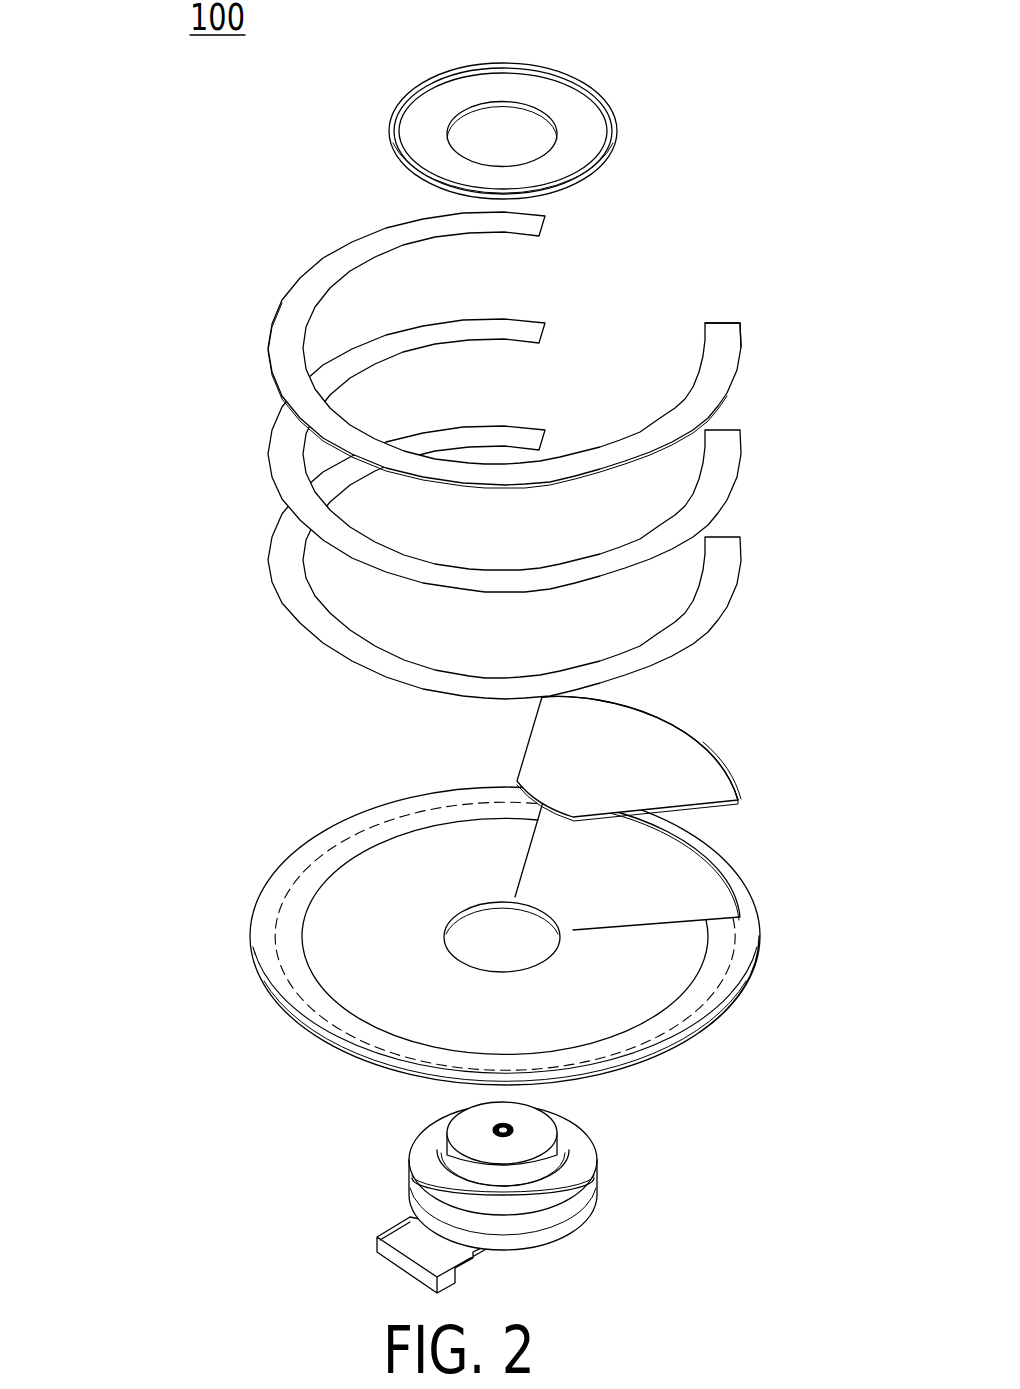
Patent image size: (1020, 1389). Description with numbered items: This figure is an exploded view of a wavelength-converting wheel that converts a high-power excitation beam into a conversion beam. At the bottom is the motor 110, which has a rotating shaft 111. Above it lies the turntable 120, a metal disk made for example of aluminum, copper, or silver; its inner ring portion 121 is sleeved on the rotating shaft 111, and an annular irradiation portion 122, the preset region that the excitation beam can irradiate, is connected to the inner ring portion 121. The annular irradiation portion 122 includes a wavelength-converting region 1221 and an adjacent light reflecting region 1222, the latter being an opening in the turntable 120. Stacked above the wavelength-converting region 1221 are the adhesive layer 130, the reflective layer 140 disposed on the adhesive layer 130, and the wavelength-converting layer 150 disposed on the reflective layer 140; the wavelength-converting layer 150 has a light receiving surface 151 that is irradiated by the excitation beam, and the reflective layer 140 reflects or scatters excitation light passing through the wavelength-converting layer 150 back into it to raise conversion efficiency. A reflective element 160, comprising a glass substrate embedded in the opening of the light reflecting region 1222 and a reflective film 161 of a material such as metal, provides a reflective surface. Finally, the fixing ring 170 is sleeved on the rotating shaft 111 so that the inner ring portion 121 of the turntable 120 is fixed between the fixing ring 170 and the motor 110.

The motor 110 is at (565, 1214).
The rotating shaft 111 is at (538, 1127).
The turntable 120 is at (140, 765).
The inner ring portion 121 is at (390, 868).
The annular irradiation portion 122 is at (280, 893).
The wavelength-converting region 1221 is at (722, 957).
The light reflecting region 1222 is at (670, 867).
The adhesive layer 130 is at (733, 558).
The reflective layer 140 is at (733, 455).
The wavelength-converting layer 150 is at (716, 370).
The light receiving surface 151 is at (730, 333).
The reflective element 160 is at (693, 752).
The reflective film 161 is at (647, 733).
The fixing ring 170 is at (567, 100).